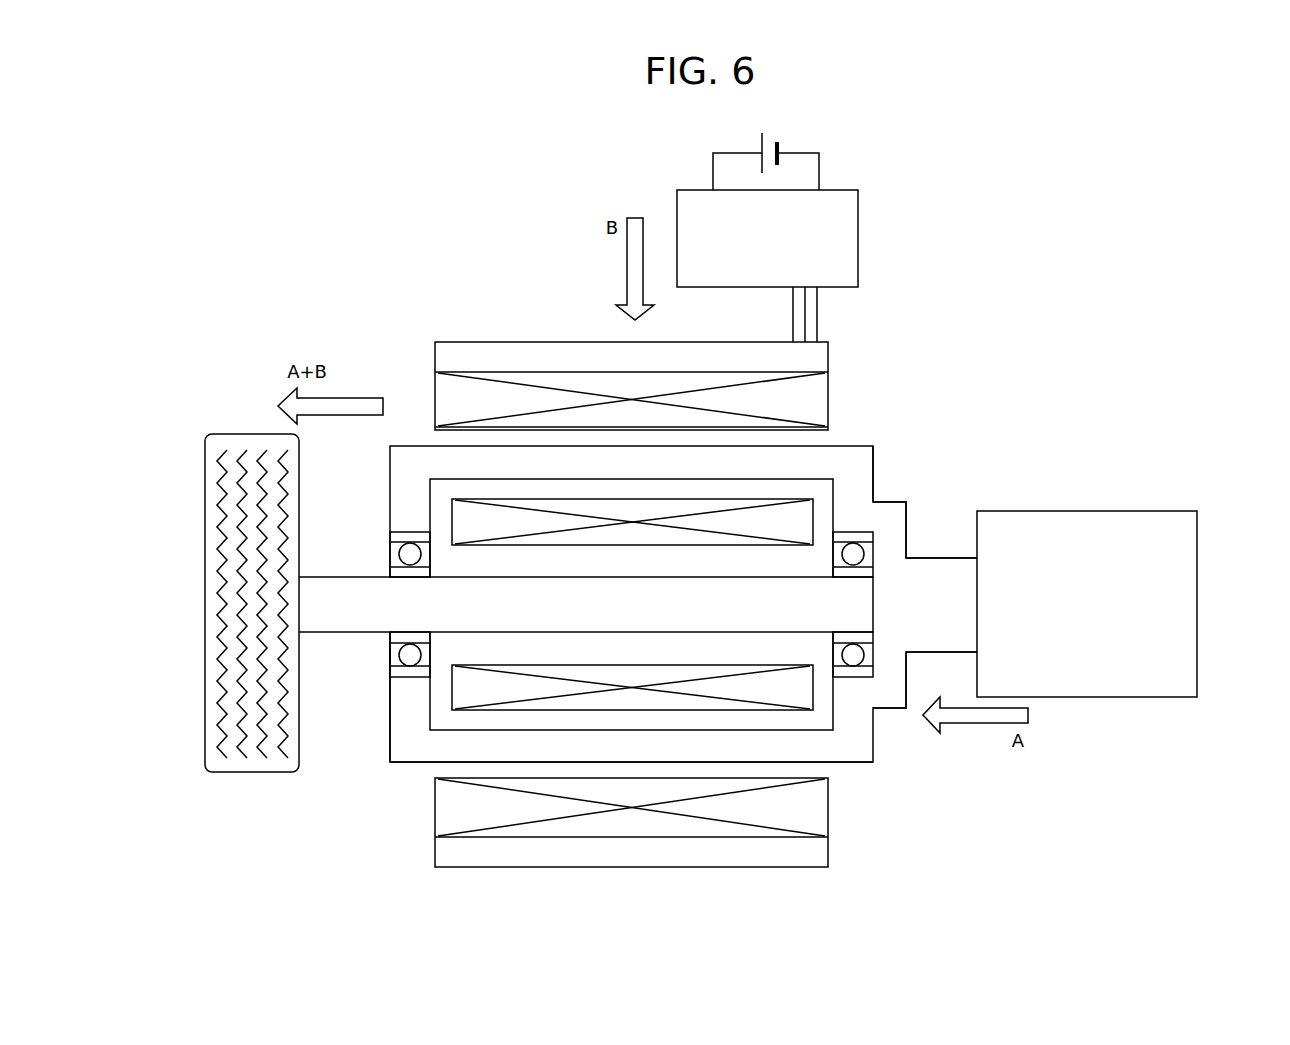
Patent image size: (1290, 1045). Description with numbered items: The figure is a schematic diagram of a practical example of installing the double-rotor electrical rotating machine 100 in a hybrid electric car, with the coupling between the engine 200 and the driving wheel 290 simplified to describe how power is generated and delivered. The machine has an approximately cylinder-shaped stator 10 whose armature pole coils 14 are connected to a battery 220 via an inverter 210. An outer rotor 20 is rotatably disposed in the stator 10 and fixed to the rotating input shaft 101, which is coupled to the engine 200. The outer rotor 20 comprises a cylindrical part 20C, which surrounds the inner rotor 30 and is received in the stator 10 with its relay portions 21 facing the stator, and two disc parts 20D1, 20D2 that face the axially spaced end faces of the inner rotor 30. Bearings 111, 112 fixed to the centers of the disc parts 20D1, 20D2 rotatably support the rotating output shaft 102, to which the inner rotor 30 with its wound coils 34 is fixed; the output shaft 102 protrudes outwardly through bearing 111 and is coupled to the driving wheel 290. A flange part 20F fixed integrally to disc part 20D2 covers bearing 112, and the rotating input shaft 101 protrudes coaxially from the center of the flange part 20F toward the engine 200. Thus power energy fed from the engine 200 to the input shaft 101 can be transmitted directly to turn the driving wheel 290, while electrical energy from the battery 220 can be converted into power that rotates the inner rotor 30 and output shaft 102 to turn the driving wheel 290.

The stator 10 is at (561, 339).
The armature pole coils 14 is at (443, 400).
The outer rotor 20 is at (386, 477).
The cylindrical part 20C is at (450, 748).
The disc part 20D1 is at (405, 700).
The disc part 20D2 is at (852, 495).
The flange part 20F is at (890, 543).
The relay portions 21 is at (793, 748).
The inner rotor 30 is at (827, 696).
The wound coils 34 is at (470, 520).
The electrical rotating machine 100 is at (958, 326).
The rotating input shaft 101 is at (940, 580).
The rotating output shaft 102 is at (345, 618).
The bearing 111 is at (392, 656).
The bearing 112 is at (853, 553).
The engine 200 is at (1197, 604).
The inverter 210 is at (858, 238).
The battery 220 is at (779, 140).
The driving wheel 290 is at (205, 693).